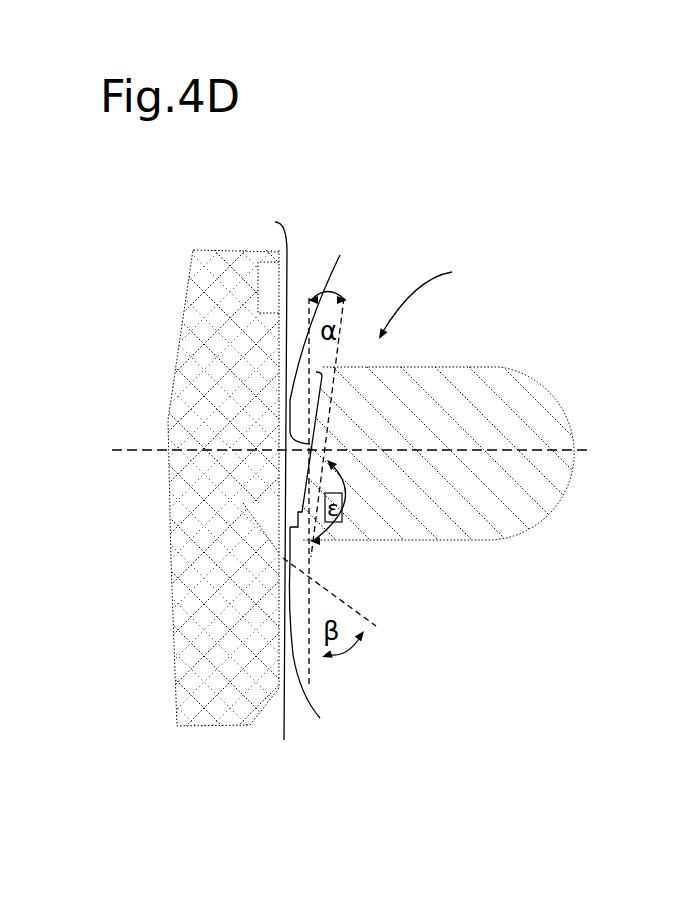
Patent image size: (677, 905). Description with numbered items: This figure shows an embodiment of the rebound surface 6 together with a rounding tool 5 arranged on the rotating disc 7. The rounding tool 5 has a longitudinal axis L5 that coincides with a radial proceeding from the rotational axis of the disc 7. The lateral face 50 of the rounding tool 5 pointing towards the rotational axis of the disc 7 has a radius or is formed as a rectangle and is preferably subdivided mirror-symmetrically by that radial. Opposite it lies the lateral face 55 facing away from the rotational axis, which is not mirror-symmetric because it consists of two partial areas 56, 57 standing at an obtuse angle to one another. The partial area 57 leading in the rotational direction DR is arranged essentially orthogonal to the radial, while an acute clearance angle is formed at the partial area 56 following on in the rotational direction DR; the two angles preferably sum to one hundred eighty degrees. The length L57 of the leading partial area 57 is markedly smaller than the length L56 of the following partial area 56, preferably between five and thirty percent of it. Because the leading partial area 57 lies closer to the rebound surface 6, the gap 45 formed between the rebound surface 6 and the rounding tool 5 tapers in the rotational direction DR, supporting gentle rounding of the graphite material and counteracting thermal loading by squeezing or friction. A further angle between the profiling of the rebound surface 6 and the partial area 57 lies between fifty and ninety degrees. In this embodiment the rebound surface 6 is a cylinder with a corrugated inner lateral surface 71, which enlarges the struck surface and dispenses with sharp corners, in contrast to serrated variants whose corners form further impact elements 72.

The rounding tool 5 is at (403, 403).
The rebound surface 6 is at (338, 476).
The rotating disc 7 is at (390, 622).
The gap 45 is at (263, 508).
The lateral face 50 is at (557, 412).
The lateral face facing away from the rotational axis 55 is at (377, 457).
The partial area following in rotational direction 56 is at (332, 400).
The partial area leading in rotational direction 57 is at (320, 528).
The corrugated inner lateral surface 71 is at (250, 473).
The impact elements 72 is at (273, 353).
The longitudinal axis L5 is at (337, 456).
The length of partial area 56 L56 is at (260, 476).
The length of partial area 57 L57 is at (282, 762).
The rotational direction DR is at (437, 295).